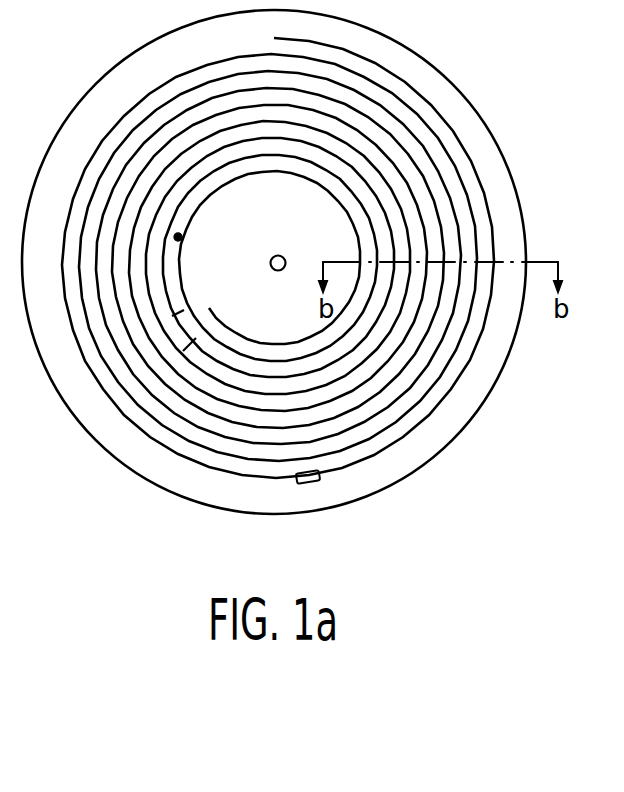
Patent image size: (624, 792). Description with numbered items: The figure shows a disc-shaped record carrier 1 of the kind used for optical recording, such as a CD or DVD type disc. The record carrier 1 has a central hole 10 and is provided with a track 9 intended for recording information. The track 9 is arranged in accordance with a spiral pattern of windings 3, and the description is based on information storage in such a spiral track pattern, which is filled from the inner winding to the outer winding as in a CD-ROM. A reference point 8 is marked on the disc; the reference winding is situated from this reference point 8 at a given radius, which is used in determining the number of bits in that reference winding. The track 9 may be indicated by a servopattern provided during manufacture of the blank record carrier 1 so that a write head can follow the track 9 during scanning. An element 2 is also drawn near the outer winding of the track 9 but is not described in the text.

The record carrier 1 is at (497, 75).
The outer connection terminal 2 is at (308, 483).
The windings 3 is at (196, 338).
The reference point 8 is at (182, 237).
The track 9 is at (137, 432).
The central hole 10 is at (278, 255).